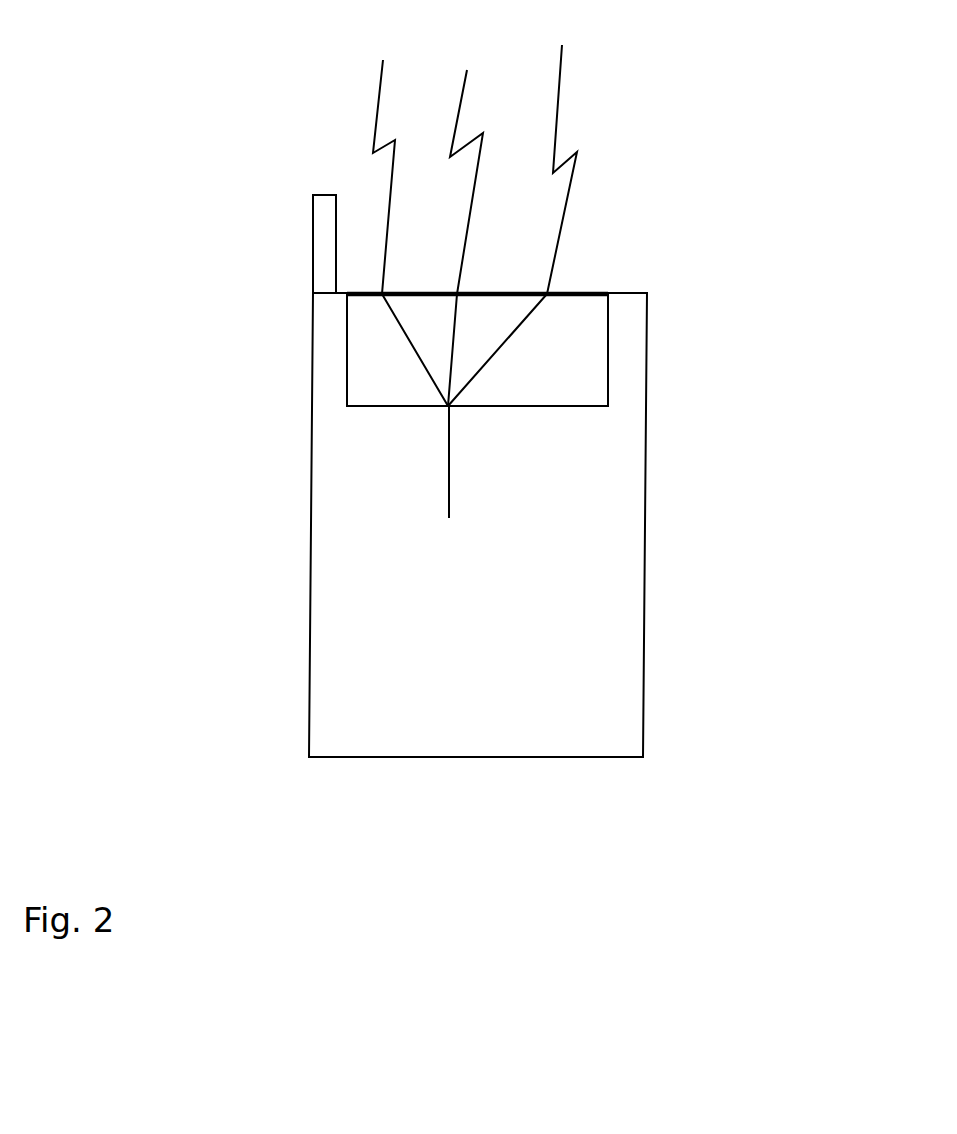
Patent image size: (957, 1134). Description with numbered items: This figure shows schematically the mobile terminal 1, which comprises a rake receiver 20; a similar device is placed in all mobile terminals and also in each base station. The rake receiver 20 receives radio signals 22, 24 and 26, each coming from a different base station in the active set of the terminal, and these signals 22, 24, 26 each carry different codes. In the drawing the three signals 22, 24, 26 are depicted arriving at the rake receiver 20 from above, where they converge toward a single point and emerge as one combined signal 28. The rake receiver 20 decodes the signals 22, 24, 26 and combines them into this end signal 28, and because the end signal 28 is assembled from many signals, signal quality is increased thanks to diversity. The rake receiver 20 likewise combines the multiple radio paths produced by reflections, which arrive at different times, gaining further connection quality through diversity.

The mobile terminal 1 is at (690, 359).
The rake receiver 20 is at (577, 313).
The radio signal 22 is at (377, 115).
The radio signal 24 is at (462, 100).
The radio signal 26 is at (558, 100).
The combined signal 28 is at (450, 487).